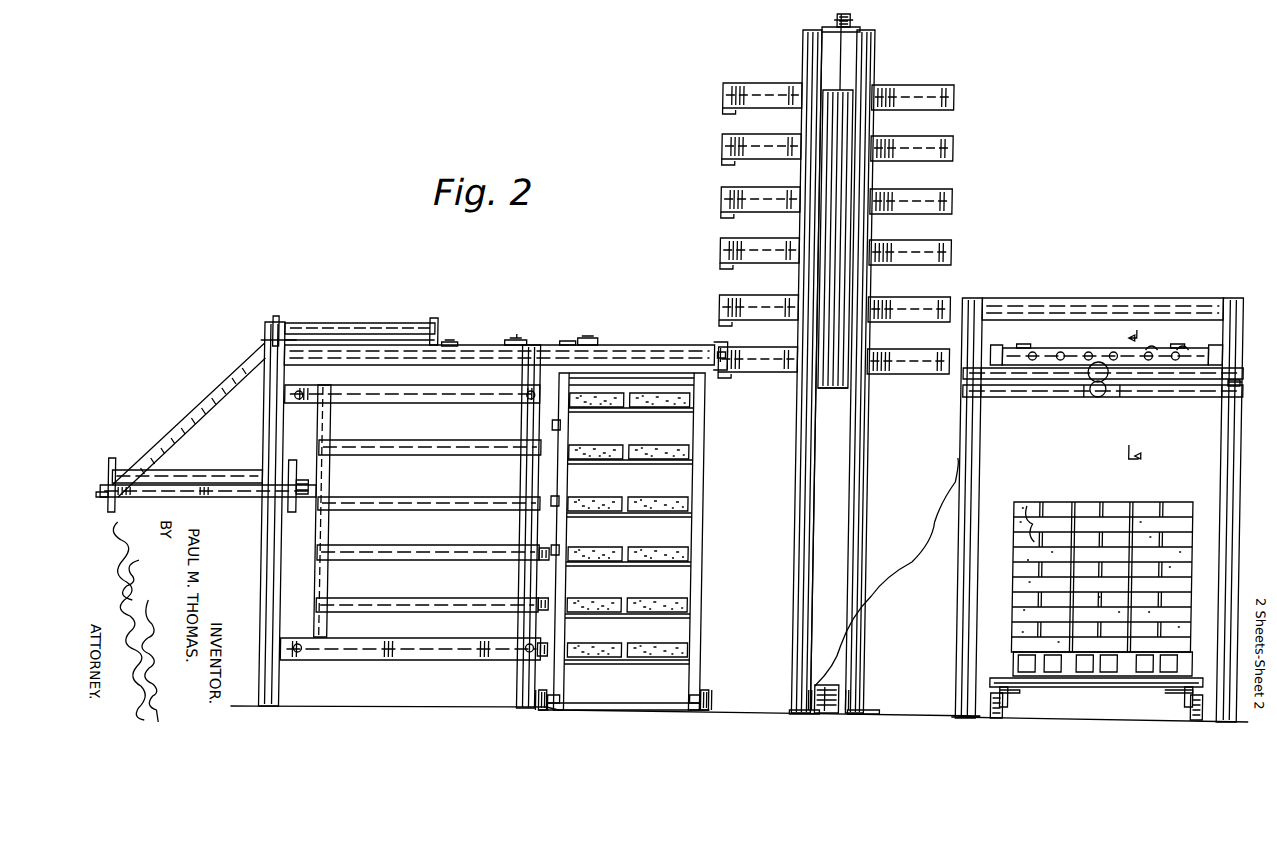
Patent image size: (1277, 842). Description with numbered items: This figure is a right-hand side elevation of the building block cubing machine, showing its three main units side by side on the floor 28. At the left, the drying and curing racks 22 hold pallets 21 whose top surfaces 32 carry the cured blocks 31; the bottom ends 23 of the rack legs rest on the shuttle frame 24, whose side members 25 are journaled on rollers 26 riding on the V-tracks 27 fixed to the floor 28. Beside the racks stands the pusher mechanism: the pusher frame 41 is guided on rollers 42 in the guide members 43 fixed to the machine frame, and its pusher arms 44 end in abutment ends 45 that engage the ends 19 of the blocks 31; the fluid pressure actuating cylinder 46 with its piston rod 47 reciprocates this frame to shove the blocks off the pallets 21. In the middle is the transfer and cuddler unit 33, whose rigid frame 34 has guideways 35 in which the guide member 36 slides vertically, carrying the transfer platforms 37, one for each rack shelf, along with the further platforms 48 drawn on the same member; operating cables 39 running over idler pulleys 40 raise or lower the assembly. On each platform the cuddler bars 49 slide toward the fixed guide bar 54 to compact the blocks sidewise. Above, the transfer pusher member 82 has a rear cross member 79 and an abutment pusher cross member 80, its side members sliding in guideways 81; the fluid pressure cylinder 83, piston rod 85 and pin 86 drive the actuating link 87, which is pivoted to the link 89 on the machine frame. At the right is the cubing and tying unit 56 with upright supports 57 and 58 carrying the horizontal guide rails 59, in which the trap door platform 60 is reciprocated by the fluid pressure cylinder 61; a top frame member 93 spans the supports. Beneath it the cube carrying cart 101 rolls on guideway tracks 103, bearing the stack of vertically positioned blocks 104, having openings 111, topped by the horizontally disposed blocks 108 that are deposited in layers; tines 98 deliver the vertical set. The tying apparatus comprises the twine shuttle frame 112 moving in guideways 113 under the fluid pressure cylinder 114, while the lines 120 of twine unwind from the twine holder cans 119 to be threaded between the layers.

The block ends 19 is at (568, 546).
The pallets 21 is at (592, 407).
The drying and curing racks 22 is at (703, 440).
The bottom ends of rack legs 23 is at (561, 708).
The shuttle frame 24 is at (627, 702).
The side members 25 is at (551, 690).
The rollers 26 is at (533, 692).
The V-tracks 27 is at (549, 714).
The floor 28 is at (250, 707).
The blocks 31 is at (614, 502).
The top surfaces of pallets 32 is at (668, 432).
The transfer and cuddler unit 33 is at (813, 357).
The rigid frame 34 is at (801, 542).
The guideways 35 is at (852, 528).
The guide member 36 is at (838, 382).
The transfer platforms 37 is at (722, 150).
The operating cables 39 is at (832, 68).
The idler pulleys 40 is at (829, 16).
The pusher frame 41 is at (312, 580).
The rollers 42 is at (306, 392).
The guide members 43 is at (426, 378).
The pusher arms 44 is at (444, 492).
The abutment ends 45 is at (552, 498).
The fluid pressure actuating cylinder 46 is at (221, 460).
The piston rod 47 is at (303, 480).
The shelf arm 48 is at (717, 260).
The cuddler bars 49 is at (950, 138).
The fixed guide bar 54 is at (949, 192).
The cubing and tying unit 56 is at (1045, 476).
The upright support 57 is at (982, 476).
The upright support 58 is at (1222, 470).
The horizontal guide rails 59 is at (994, 355).
The trap door platform 60 is at (1056, 357).
The fluid pressure cylinder 61 is at (1096, 353).
The rear cross member 79 is at (437, 320).
The abutment pusher cross member 80 is at (719, 370).
The guideways 81 is at (386, 378).
The transfer pusher member 82 is at (637, 342).
The fluid pressure cylinder 83 is at (353, 324).
The piston rod 85 is at (449, 342).
The pin 86 is at (569, 342).
The actuating link 87 is at (585, 346).
The link 89 is at (517, 342).
The top beam 93 is at (1025, 338).
The tines 98 is at (1186, 348).
The cube carrying carts 101 is at (1149, 698).
The guideway tracks 103 is at (997, 720).
The stack of vertically positioned blocks 104 is at (1014, 670).
The horizontally disposed blocks 108 is at (1085, 516).
The openings 111 is at (1242, 388).
The twine shuttle frame 112 is at (1053, 394).
The guideways 113 is at (977, 384).
The fluid pressure cylinder 114 is at (1099, 400).
The twine holder cans 119 is at (824, 683).
The lines 120 is at (1024, 506).